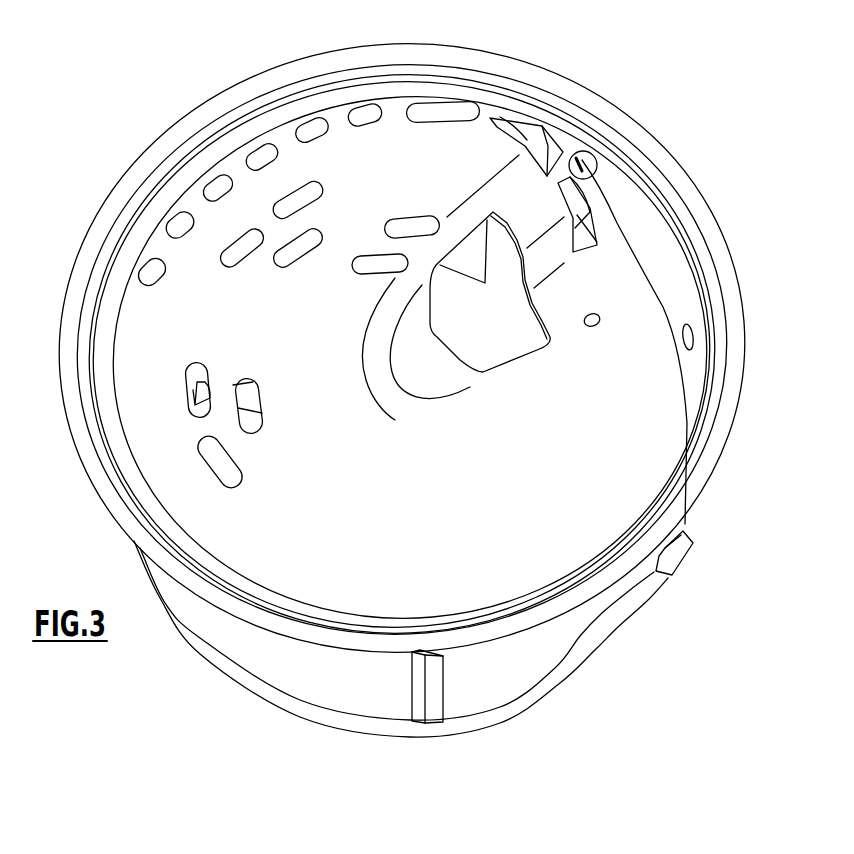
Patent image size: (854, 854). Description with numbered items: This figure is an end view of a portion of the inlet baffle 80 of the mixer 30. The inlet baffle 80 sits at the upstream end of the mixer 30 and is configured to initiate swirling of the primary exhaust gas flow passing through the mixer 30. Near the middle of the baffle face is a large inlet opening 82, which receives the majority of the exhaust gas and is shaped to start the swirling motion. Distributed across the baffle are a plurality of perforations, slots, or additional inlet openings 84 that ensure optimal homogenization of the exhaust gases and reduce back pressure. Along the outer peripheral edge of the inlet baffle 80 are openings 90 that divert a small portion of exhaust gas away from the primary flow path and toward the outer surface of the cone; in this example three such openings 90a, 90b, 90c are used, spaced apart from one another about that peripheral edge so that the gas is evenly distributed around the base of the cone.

The mixer 30 is at (682, 97).
The inlet baffle 80 is at (640, 422).
The large inlet opening 82 is at (539, 313).
The additional inlet openings 84 is at (187, 375).
The openings 90 is at (483, 86).
The first opening 90a is at (427, 115).
The second opening 90b is at (527, 137).
The third opening 90c is at (590, 220).